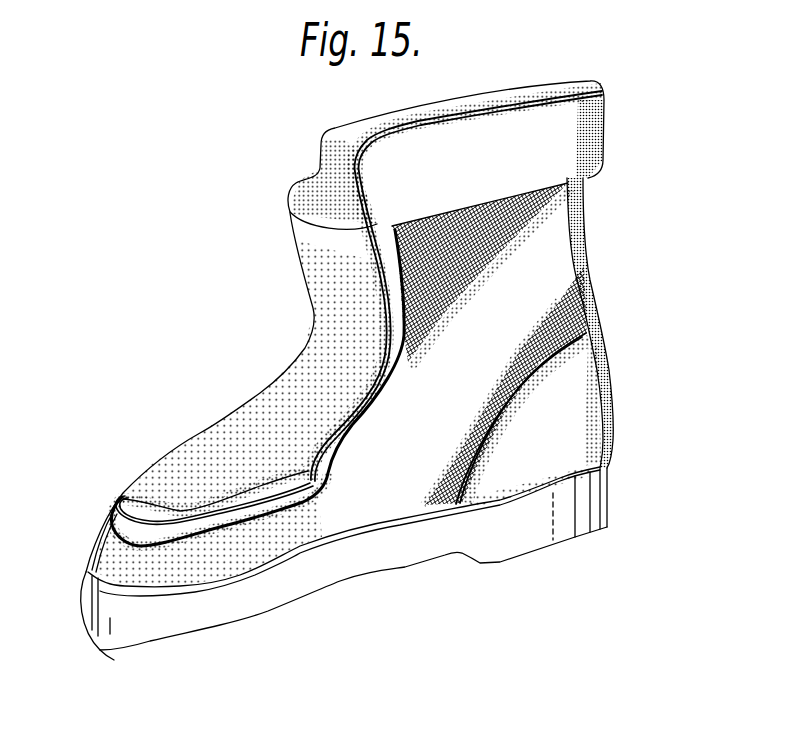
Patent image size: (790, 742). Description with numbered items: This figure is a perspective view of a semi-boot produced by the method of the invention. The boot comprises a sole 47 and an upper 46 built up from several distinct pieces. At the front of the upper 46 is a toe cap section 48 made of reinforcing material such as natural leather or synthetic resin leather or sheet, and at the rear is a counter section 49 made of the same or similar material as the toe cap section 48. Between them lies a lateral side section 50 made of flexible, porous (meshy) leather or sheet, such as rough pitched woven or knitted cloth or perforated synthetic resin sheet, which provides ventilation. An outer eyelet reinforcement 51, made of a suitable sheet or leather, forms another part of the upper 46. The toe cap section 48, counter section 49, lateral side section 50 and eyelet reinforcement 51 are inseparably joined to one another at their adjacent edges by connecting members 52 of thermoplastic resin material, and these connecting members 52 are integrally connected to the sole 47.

The upper 46 is at (590, 234).
The sole 47 is at (405, 552).
The toe cap section 48 is at (134, 586).
The counter section 49 is at (583, 408).
The lateral side section 50 is at (452, 512).
The outer eyelet reinforcement 51 is at (237, 437).
The connecting members 52 is at (380, 327).